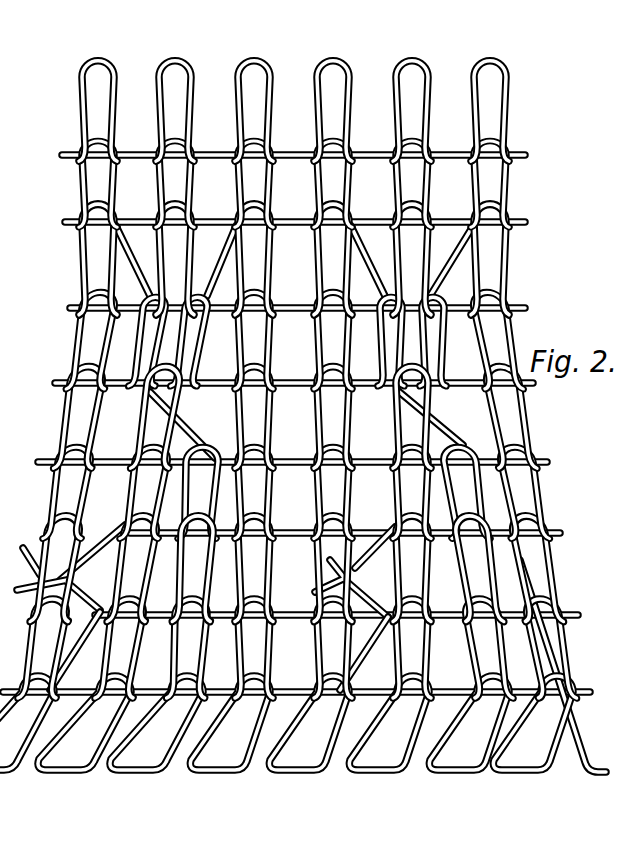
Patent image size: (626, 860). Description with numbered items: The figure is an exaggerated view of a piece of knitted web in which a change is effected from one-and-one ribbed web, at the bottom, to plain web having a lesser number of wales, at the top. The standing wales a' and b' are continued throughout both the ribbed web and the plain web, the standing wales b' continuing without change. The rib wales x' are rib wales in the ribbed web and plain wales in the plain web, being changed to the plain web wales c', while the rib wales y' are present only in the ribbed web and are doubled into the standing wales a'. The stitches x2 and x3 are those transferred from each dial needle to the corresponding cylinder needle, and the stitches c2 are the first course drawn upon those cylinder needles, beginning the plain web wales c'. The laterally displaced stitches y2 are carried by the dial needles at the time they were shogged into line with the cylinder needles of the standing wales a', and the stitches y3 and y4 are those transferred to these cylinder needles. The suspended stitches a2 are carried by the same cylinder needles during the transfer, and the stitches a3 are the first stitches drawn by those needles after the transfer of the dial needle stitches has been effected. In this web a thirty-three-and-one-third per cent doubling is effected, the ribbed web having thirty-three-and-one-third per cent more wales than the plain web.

The plain web wales c' is at (185, 365).
The standing wales a' is at (234, 418).
The standing wales b' is at (398, 418).
The rib wales x' is at (174, 740).
The rib wales y' is at (311, 660).
The first stitches drawn by cylinder needles a a3 is at (403, 222).
The transferred stitches y4 is at (443, 264).
The suspended stitches a2 is at (386, 357).
The transferred stitches y3 is at (449, 346).
The laterally displaced stitches y2 is at (463, 416).
The stitches of the first course c2 is at (322, 512).
The transferred stitches x3 is at (352, 590).
The transferred stitches x2 is at (361, 637).